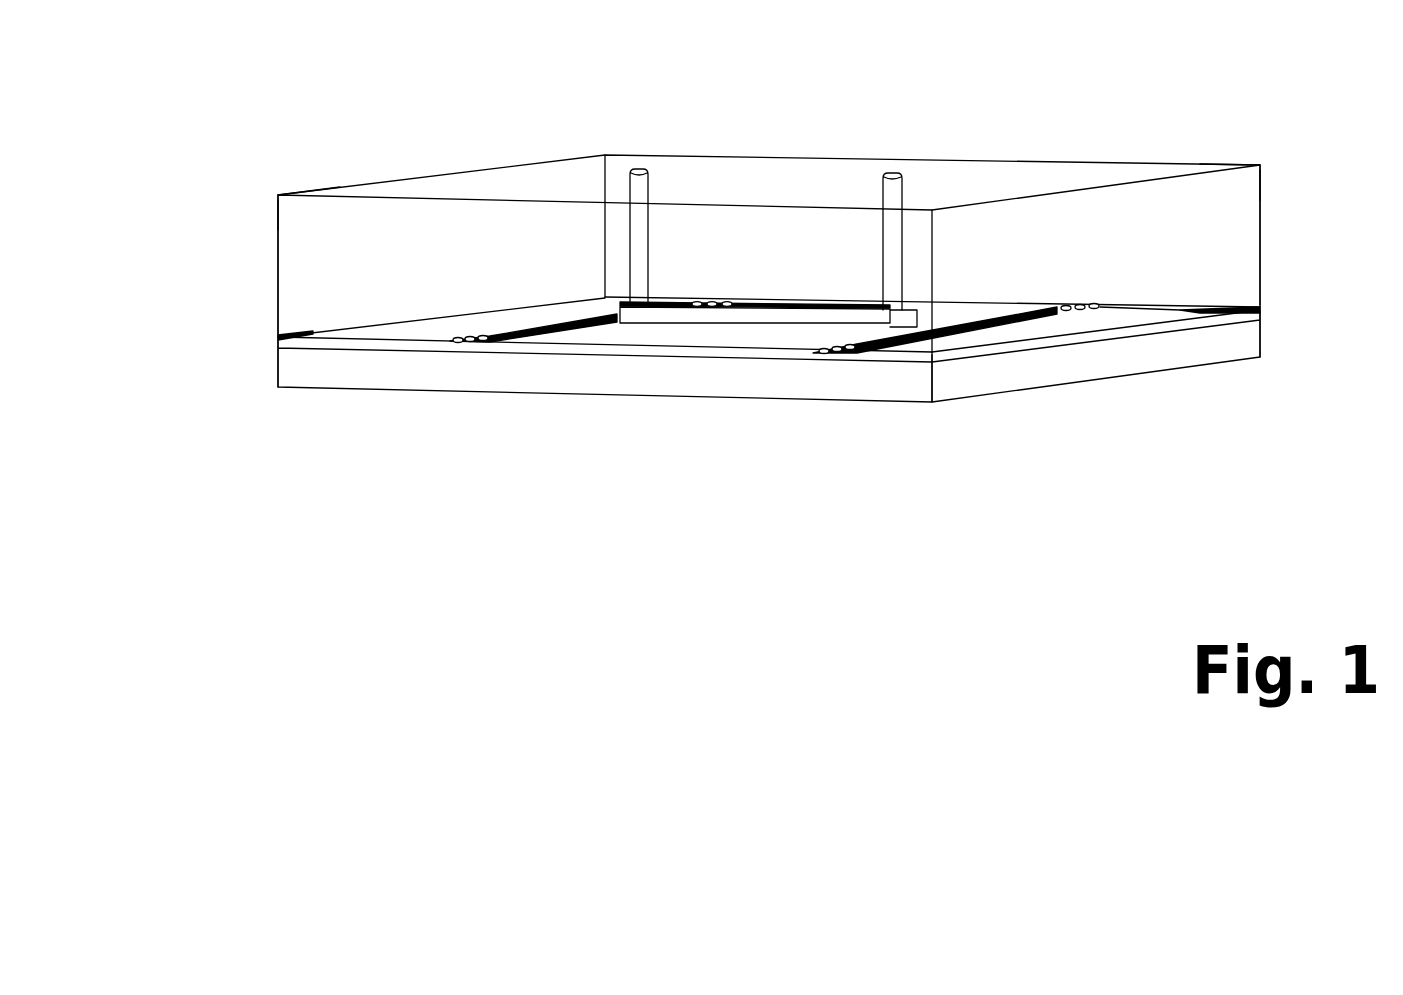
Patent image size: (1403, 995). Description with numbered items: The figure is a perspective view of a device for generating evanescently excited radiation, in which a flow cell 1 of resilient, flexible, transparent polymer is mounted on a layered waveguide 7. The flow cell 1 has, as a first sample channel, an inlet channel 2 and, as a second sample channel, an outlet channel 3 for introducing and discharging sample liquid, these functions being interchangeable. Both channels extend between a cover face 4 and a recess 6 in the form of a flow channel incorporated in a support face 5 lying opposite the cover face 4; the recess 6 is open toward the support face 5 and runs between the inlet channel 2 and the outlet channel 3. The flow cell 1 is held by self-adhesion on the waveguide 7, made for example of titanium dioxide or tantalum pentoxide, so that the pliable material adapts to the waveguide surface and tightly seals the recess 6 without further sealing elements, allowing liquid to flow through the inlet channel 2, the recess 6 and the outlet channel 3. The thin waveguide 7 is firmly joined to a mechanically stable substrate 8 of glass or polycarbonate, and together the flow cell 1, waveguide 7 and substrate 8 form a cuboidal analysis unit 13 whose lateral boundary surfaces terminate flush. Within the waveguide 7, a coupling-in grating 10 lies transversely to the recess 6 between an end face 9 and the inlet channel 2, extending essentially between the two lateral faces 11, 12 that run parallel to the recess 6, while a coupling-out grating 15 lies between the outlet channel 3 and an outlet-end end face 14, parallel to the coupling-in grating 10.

The flow cell 1 is at (1260, 198).
The inlet channel 2 is at (650, 190).
The outlet channel 3 is at (903, 195).
The cover face 4 is at (788, 180).
The support face 5 is at (660, 333).
The recess 6 is at (797, 315).
The waveguide 7 is at (1258, 309).
The substrate 8 is at (1222, 343).
The end face 9 is at (258, 282).
The coupling-in grating 10 is at (484, 328).
The lateral face 11 is at (370, 273).
The lateral face 12 is at (1136, 140).
The analysis unit 13 is at (408, 150).
The outlet-end end face 14 is at (1207, 237).
The coupling-out grating 15 is at (1040, 338).